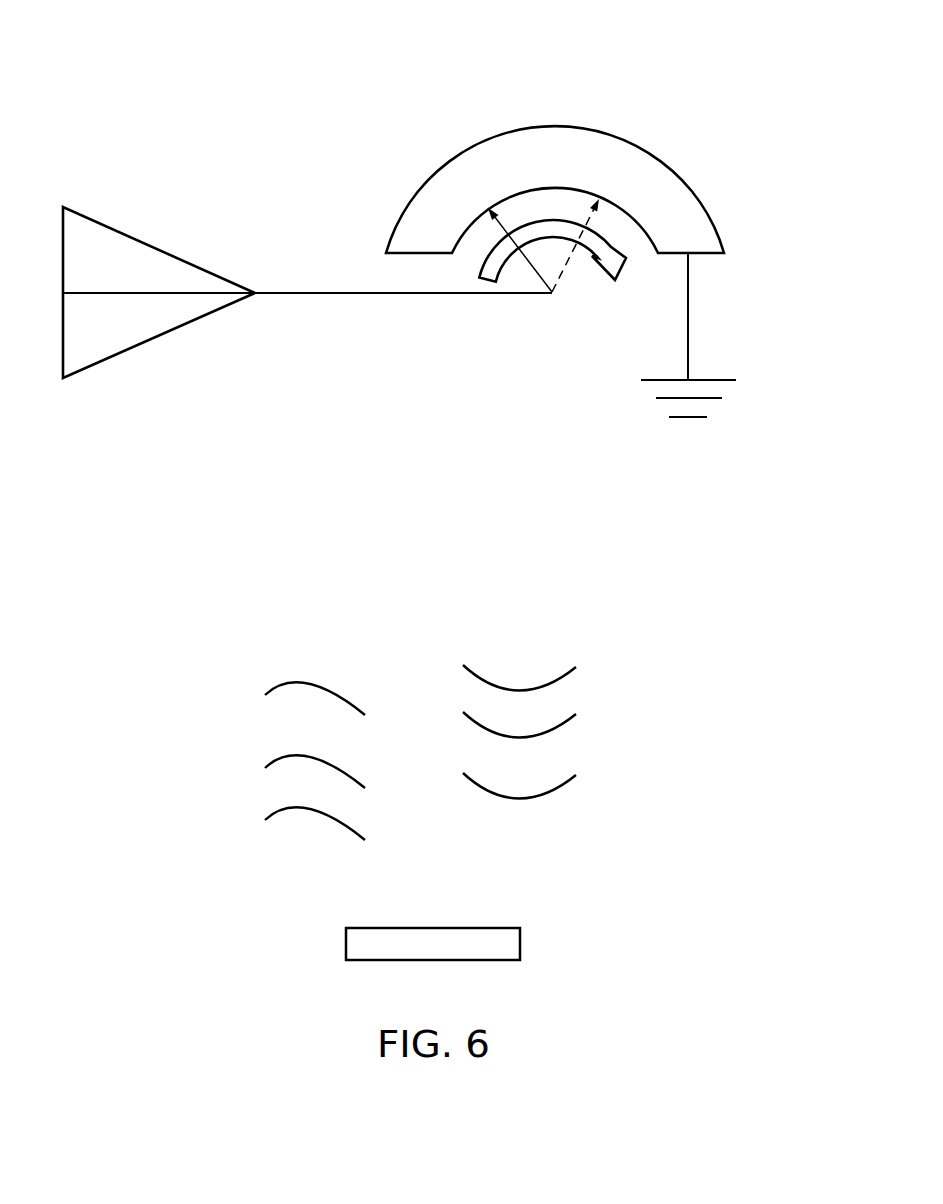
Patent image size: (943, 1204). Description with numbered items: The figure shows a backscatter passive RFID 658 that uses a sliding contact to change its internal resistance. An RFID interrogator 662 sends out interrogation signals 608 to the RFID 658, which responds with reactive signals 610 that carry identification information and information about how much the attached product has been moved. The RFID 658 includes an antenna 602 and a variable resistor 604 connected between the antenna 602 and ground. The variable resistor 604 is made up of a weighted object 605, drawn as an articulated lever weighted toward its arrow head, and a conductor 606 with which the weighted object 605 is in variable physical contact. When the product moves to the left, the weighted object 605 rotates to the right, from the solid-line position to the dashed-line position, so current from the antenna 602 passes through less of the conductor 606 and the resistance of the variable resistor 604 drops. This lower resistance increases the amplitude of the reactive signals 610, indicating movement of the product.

The RFID 658 is at (464, 272).
The antenna 602 is at (516, 457).
The variable resistor 604 is at (785, 118).
The weighted object 605 is at (487, 203).
The conductor 606 is at (543, 138).
The interrogation signals 608 is at (238, 761).
The reactive signals 610 is at (592, 711).
The RFID interrogator 662 is at (432, 928).